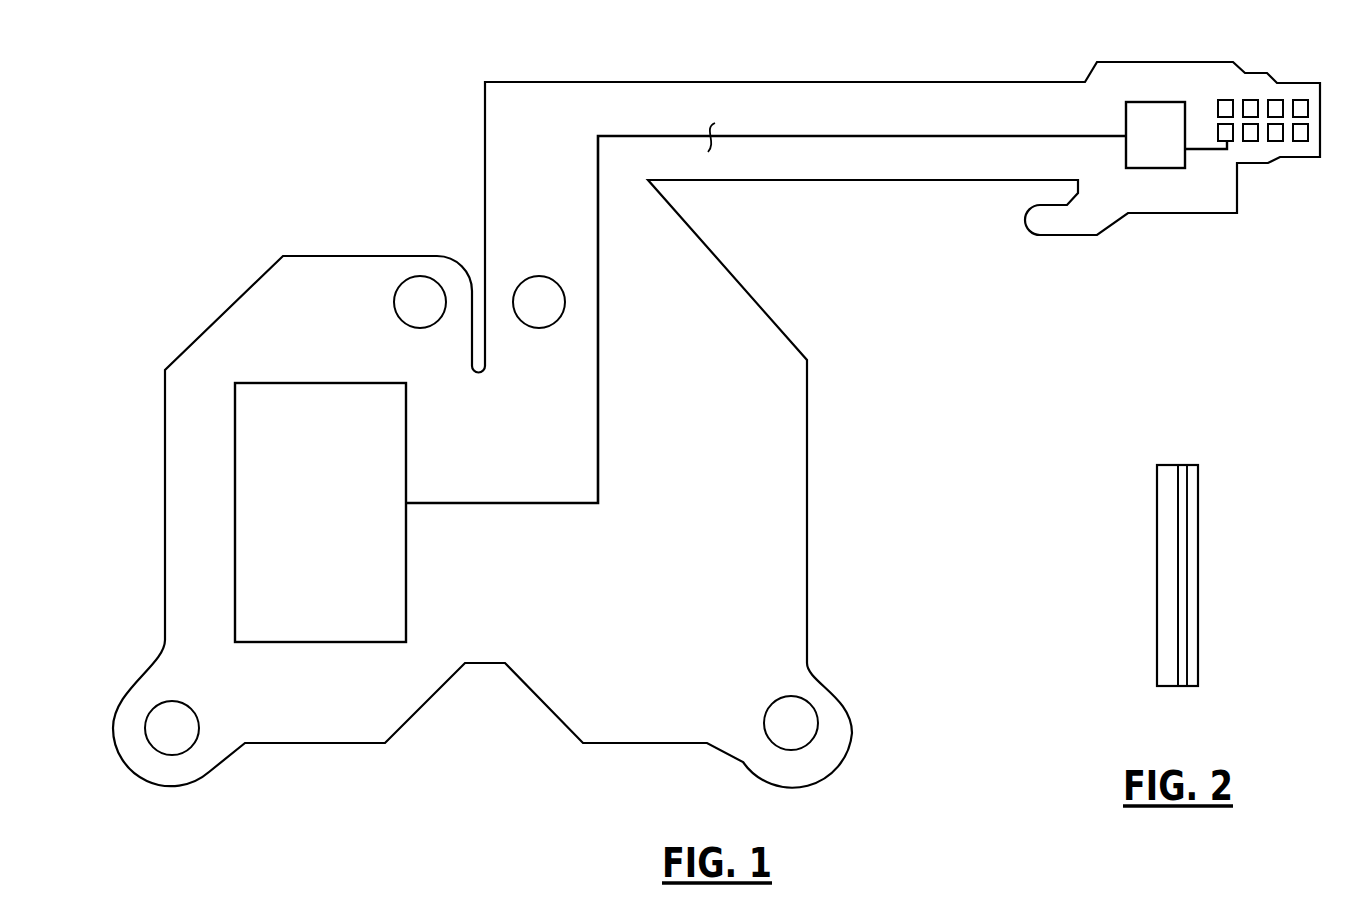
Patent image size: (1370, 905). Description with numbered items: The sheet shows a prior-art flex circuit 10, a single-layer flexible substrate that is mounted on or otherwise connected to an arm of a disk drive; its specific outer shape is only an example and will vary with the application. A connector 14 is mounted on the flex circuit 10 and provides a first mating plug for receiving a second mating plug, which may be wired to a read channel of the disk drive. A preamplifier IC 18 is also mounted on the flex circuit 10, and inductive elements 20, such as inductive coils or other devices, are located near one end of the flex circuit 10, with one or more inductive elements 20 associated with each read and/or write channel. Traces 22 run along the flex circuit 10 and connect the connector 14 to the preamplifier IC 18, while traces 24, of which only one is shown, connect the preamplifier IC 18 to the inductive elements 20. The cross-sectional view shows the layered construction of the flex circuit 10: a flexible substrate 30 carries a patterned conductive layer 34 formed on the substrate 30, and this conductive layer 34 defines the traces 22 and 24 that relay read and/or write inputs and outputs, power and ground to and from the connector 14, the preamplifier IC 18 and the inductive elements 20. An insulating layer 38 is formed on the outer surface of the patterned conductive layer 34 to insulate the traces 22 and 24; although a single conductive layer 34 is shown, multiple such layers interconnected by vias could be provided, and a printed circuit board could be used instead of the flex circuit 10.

In FIG. 1, the flex circuit 10 is at (807, 528).
In FIG. 2, the flex circuit 10 is at (1130, 462).
In FIG. 1, the connector 14 is at (406, 444).
In FIG. 1, the preamplifier IC 18 is at (1163, 102).
In FIG. 1, the inductive elements 20 is at (1283, 108).
In FIG. 1, the traces 22 is at (860, 135).
In FIG. 1, the traces 24 is at (1207, 149).
In FIG. 2, the flexible substrate 30 is at (1163, 526).
In FIG. 2, the patterned conductive layer 34 is at (1187, 474).
In FIG. 2, the insulating layer 38 is at (1198, 523).